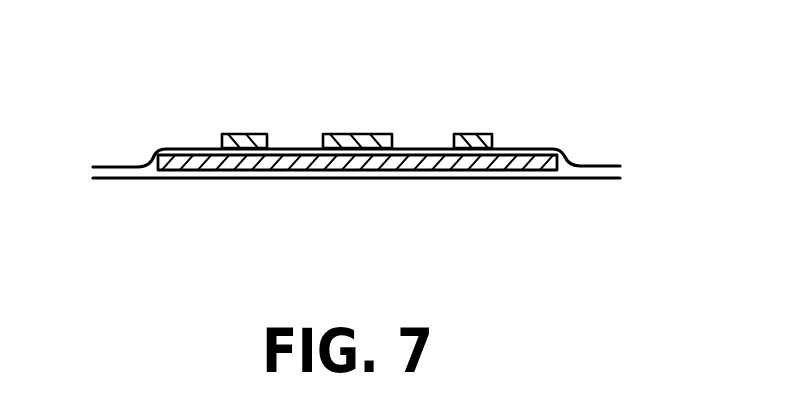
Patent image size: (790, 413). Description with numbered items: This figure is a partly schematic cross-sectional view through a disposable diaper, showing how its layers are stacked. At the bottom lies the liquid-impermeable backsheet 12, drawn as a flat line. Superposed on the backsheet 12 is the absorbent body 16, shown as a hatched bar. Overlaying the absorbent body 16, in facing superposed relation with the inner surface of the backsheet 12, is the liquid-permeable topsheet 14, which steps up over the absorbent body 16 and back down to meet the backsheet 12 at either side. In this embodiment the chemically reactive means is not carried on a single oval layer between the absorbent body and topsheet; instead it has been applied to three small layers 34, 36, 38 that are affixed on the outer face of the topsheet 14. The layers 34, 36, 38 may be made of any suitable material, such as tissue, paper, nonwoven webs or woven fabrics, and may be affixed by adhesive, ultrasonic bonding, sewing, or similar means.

The liquid-impermeable backsheet 12 is at (596, 179).
The liquid-permeable topsheet 14 is at (591, 166).
The absorbent body 16 is at (193, 171).
The layer 34 is at (469, 133).
The layer 36 is at (347, 133).
The layer 38 is at (243, 133).